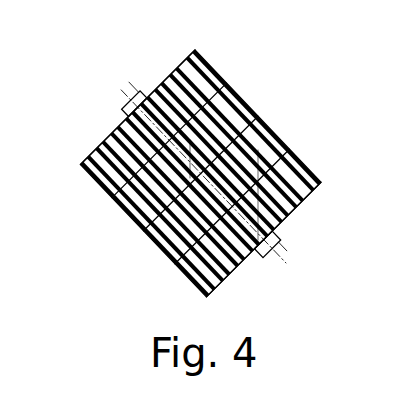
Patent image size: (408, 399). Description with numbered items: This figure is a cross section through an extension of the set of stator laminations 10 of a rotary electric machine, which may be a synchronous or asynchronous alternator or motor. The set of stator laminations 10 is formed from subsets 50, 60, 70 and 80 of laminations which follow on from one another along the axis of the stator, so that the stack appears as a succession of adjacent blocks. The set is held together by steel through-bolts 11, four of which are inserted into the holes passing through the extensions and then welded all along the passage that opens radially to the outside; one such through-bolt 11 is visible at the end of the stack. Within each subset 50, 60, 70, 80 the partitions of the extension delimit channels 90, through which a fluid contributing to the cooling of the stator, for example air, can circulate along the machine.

The set of stator laminations 10 is at (175, 164).
The steel through-bolt 11 is at (291, 246).
The subset 50 is at (190, 288).
The subset 60 is at (157, 253).
The subset 70 is at (120, 217).
The subset 80 is at (85, 183).
The channel 90 is at (184, 64).